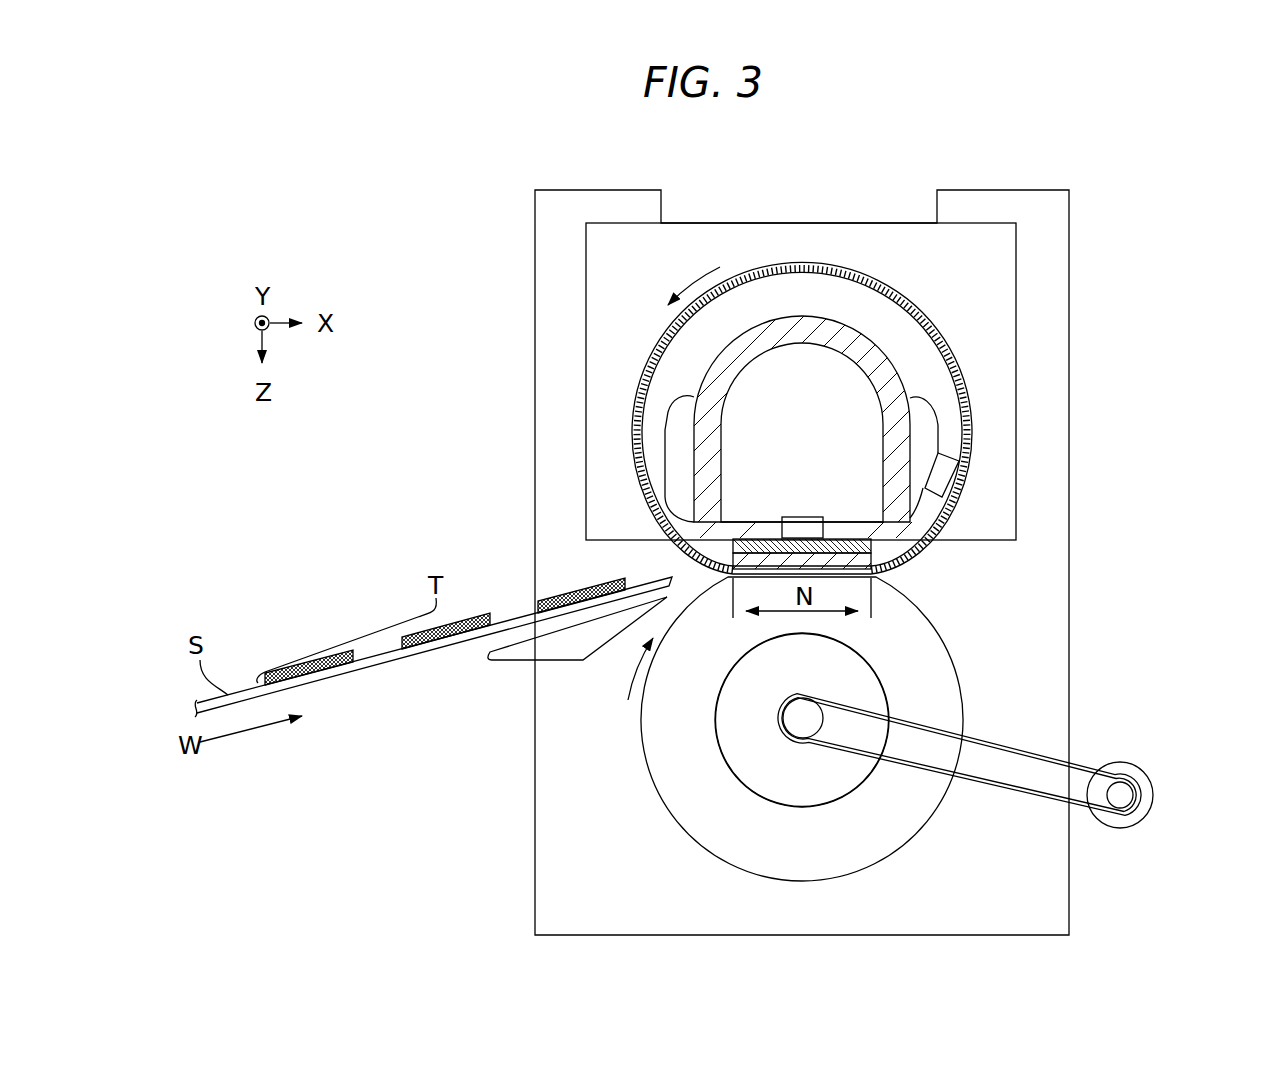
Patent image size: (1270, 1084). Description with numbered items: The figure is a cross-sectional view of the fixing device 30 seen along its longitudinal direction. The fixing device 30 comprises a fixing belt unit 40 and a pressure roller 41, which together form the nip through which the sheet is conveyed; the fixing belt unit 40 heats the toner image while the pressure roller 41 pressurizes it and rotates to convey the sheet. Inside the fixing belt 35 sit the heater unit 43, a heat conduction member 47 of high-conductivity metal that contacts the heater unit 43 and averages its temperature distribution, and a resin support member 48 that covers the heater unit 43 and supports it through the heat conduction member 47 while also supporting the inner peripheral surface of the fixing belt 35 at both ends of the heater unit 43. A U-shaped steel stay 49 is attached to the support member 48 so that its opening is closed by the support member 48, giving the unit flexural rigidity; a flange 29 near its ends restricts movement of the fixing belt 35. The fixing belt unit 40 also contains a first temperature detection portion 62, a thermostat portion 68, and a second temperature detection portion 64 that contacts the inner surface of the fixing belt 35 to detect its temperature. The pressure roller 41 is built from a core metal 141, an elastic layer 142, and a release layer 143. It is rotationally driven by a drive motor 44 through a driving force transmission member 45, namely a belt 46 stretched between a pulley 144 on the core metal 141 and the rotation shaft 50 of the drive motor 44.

The fixing device 30 is at (1026, 168).
The flange 29 is at (1016, 260).
The fixing belt unit 40 is at (1010, 316).
The fixing belt 35 is at (967, 438).
The stay 49 is at (813, 316).
The support member 48 is at (922, 428).
The second temperature detection portion 64 is at (943, 477).
The first temperature detection portion 62 is at (802, 527).
The thermostat portion 68 is at (626, 502).
The heat conduction member 47 is at (863, 545).
The heater unit 43 is at (856, 560).
The pressure roller 41 is at (787, 739).
The core metal 141 is at (752, 714).
The elastic layer 142 is at (688, 753).
The release layer 143 is at (667, 807).
The pulley 144 is at (806, 716).
The belt 46 is at (1047, 760).
The driving force transmission member 45 is at (1032, 808).
The drive motor 44 is at (1147, 783).
The rotation shaft 50 is at (1122, 797).